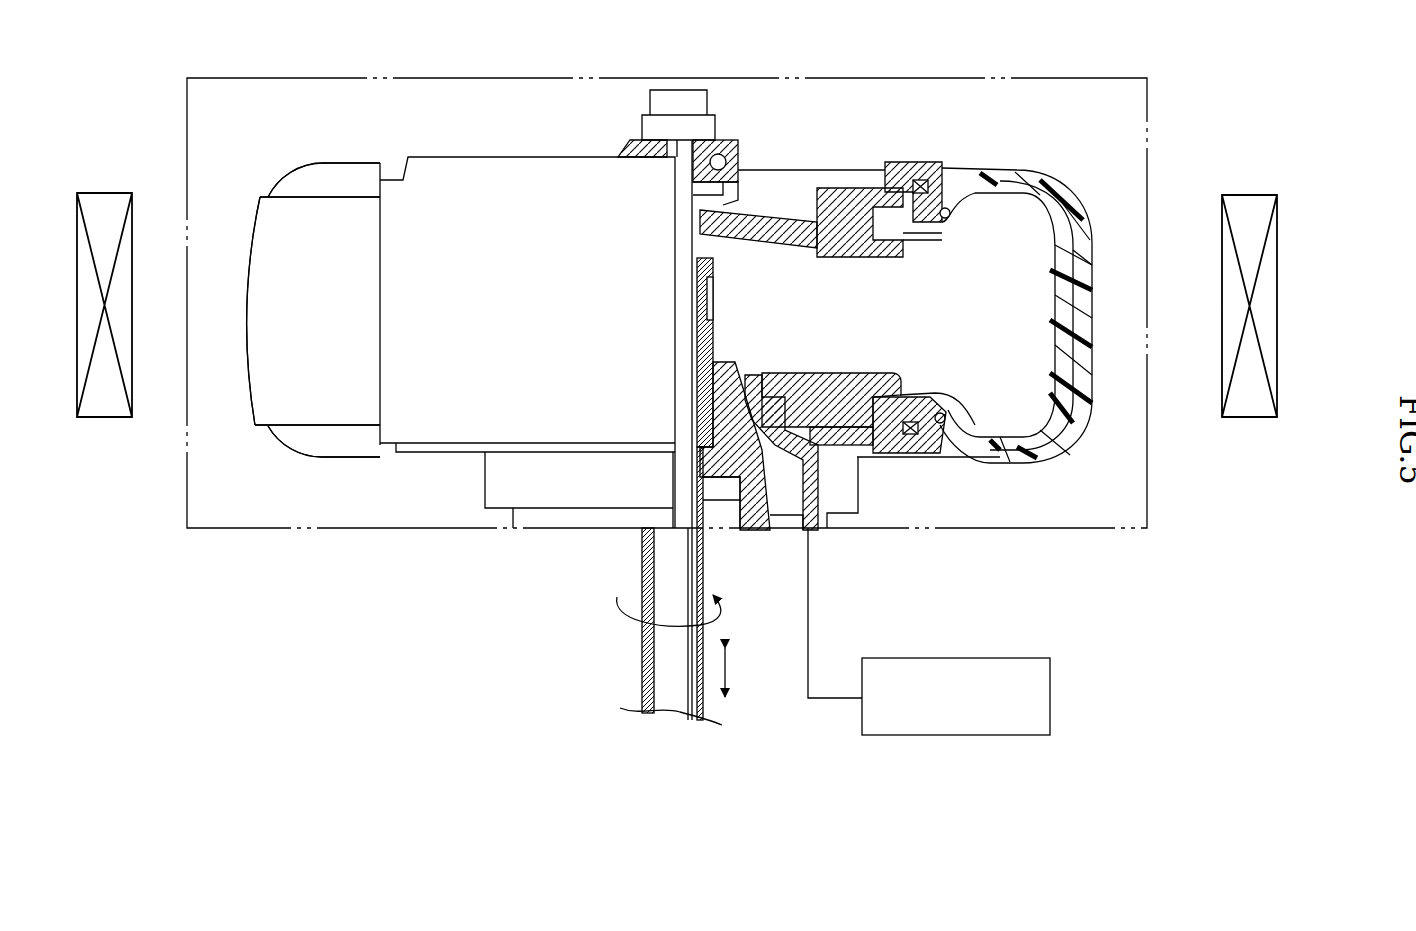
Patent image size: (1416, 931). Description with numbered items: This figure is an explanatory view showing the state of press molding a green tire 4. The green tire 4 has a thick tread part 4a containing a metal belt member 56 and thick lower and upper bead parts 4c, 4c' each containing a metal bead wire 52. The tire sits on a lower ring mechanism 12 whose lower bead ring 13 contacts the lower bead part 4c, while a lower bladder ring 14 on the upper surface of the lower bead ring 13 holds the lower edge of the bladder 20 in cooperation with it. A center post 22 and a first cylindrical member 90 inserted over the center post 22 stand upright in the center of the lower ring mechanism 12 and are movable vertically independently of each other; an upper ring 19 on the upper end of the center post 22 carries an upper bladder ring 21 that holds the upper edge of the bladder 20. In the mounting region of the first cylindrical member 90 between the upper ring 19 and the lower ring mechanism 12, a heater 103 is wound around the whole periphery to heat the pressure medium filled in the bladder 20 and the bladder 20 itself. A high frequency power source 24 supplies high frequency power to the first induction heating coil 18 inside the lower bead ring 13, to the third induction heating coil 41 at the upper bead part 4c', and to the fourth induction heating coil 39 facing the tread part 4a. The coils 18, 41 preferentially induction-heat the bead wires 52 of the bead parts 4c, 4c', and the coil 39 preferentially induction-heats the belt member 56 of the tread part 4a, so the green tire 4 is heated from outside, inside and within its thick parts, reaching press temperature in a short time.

The green tire 4 is at (276, 165).
The tread part 4a is at (256, 242).
The lower bead part 4c is at (324, 469).
The upper bead part 4c' is at (324, 149).
The lower ring mechanism 12 is at (868, 498).
The lower bead ring 13 is at (941, 447).
The lower bladder ring 14 is at (840, 378).
The first induction heating coil 18 is at (912, 436).
The upper ring 19 is at (868, 140).
The bladder 20 is at (457, 172).
The upper bladder ring 21 is at (768, 215).
The center post 22 is at (655, 672).
The high frequency power source 24 is at (1052, 702).
The fourth induction heating coil 39 is at (1247, 408).
The third induction heating coil 41 is at (929, 166).
The bead wire 52 is at (947, 219).
The belt member 56 is at (1076, 250).
The first cylindrical member 90 is at (704, 570).
The heater 103 is at (714, 308).